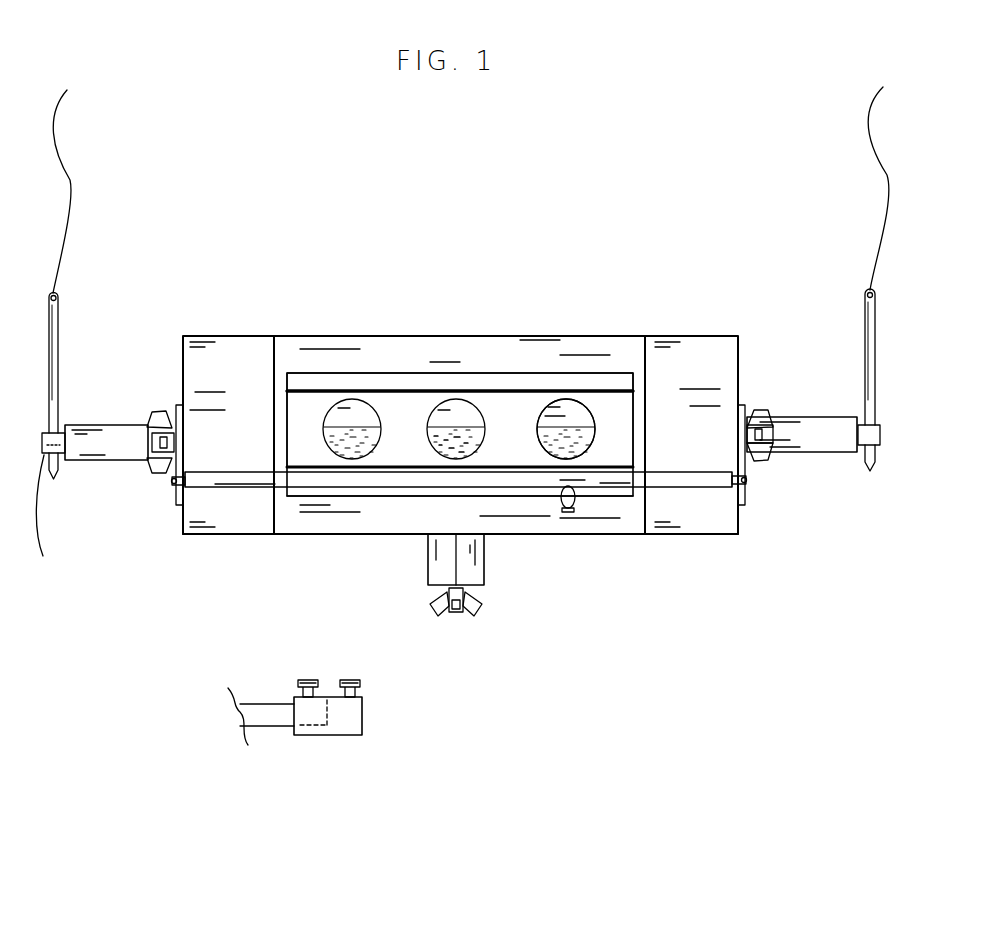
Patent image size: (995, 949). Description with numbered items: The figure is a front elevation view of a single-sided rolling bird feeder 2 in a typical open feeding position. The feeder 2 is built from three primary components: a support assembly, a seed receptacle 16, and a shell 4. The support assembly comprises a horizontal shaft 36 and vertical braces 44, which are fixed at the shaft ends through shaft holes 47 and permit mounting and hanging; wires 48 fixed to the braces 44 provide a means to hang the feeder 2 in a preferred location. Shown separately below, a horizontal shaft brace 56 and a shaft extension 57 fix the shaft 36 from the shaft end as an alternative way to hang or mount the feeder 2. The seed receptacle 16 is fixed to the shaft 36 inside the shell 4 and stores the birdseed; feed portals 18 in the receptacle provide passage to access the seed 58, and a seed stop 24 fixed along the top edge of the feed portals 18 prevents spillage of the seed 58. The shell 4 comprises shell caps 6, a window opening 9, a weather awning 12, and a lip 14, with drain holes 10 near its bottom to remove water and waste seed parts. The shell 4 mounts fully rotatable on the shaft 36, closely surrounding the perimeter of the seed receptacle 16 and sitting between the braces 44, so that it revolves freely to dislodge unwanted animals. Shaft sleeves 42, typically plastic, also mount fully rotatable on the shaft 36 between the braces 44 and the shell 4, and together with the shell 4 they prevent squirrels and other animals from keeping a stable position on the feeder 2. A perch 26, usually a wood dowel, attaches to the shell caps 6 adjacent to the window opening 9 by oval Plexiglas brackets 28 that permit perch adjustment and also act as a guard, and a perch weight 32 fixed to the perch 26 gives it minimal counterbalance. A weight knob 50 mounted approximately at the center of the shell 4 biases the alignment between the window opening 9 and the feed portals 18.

The rolling bird feeder 2 is at (503, 320).
The shell 4 is at (425, 336).
The shell caps 6 is at (225, 336).
The window opening 9 is at (632, 428).
The drain holes 10 is at (400, 536).
The weather awning 12 is at (590, 388).
The lip 14 is at (636, 462).
The seed receptacle 16 is at (390, 402).
The feed portals 18 is at (590, 437).
The seed stop 24 is at (343, 427).
The perch 26 is at (310, 497).
The brackets 28 is at (180, 507).
The perch weight 32 is at (560, 498).
The horizontal shaft 36 is at (44, 519).
The shaft sleeves 42 is at (70, 426).
The vertical braces 44 is at (58, 322).
The shaft holes 47 is at (74, 462).
The wires 48 is at (70, 197).
The weight knob 50 is at (428, 555).
The horizontal shaft brace 56 is at (325, 735).
The shaft extension 57 is at (277, 727).
The seed 58 is at (440, 452).